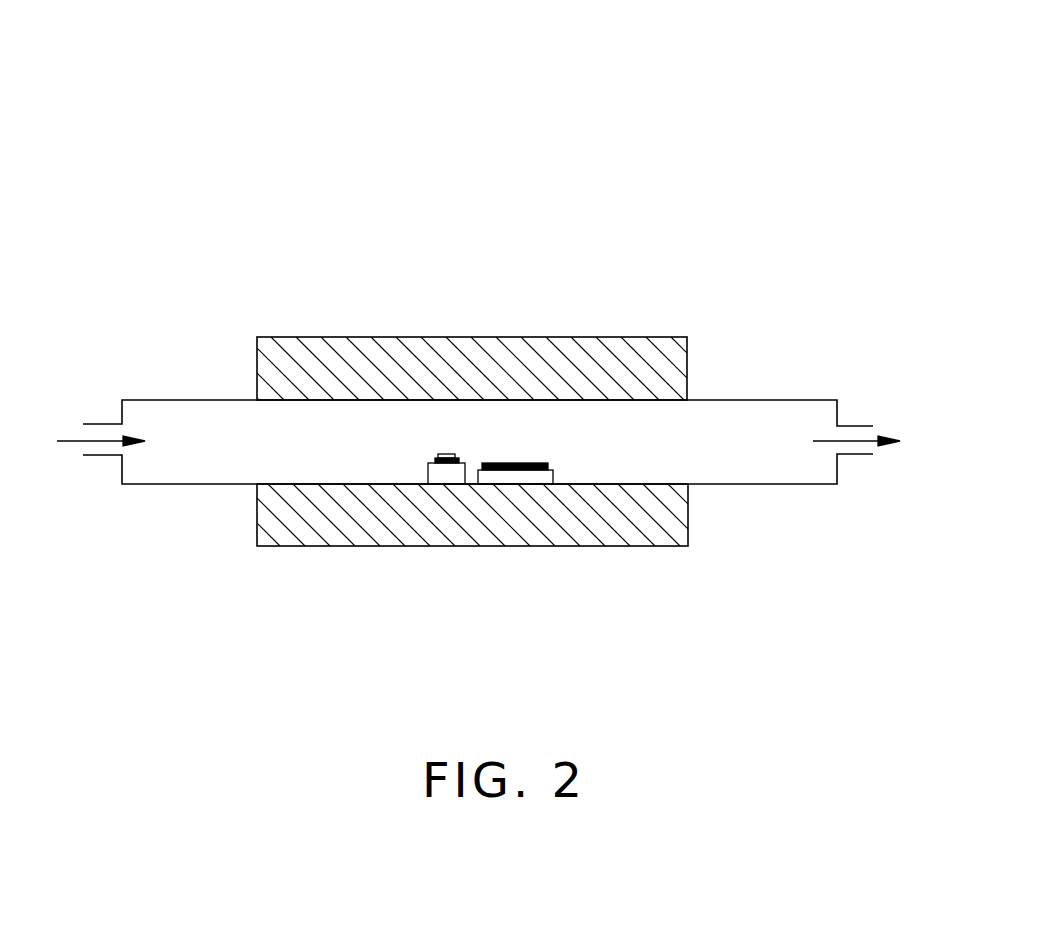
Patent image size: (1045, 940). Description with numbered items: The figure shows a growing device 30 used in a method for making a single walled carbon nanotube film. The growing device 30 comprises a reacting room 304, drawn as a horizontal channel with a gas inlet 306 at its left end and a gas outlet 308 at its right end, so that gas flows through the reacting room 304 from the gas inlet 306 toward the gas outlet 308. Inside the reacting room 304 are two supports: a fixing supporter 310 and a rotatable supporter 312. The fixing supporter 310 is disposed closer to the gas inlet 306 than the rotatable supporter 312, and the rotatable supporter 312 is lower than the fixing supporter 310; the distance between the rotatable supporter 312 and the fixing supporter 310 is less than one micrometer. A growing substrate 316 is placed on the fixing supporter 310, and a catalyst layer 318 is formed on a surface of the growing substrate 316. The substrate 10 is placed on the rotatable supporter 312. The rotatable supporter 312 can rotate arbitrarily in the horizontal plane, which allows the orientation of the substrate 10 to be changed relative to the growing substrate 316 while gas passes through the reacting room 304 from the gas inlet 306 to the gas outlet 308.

The growing device 30 is at (503, 93).
The reacting room 304 is at (750, 400).
The gas inlet 306 is at (97, 432).
The gas outlet 308 is at (872, 434).
The fixing supporter 310 is at (445, 472).
The rotatable supporter 312 is at (525, 475).
The growing substrate 316 is at (435, 459).
The catalyst layer 318 is at (447, 452).
The substrate 10 is at (533, 463).